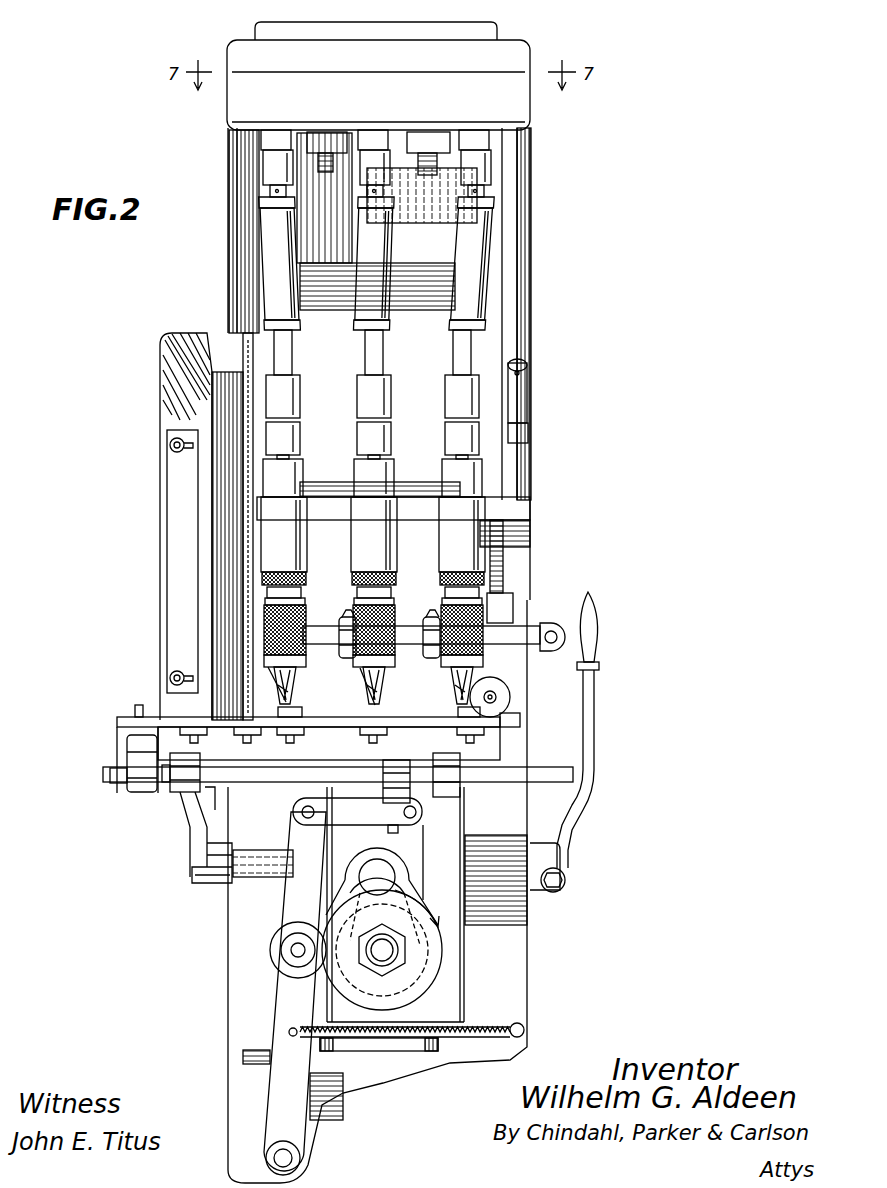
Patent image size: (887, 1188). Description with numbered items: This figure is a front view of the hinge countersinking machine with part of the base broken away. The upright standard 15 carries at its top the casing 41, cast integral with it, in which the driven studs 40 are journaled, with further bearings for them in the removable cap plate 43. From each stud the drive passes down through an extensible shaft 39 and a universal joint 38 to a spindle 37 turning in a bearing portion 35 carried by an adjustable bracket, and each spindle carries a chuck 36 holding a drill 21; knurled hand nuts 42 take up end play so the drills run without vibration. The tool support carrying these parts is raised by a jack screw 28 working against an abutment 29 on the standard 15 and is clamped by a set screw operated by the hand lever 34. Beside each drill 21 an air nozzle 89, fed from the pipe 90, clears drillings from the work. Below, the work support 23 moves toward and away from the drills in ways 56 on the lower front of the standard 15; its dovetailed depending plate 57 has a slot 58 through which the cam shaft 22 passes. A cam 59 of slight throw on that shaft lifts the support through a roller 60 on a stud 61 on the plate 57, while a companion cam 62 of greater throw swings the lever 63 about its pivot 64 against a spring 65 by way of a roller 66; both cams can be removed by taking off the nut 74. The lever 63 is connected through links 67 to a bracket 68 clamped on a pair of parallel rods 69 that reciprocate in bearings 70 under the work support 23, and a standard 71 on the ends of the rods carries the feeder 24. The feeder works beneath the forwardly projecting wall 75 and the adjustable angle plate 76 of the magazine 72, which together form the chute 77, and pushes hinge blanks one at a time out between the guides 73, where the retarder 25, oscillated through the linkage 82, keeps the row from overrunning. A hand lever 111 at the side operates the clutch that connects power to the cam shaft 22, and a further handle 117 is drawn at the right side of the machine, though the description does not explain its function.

The standard 15 is at (238, 273).
The drills 21 is at (380, 690).
The cam shaft 22 is at (387, 953).
The work support 23 is at (487, 745).
The feeder 24 is at (117, 722).
The retarder 25 is at (503, 699).
The jack screw 28 is at (505, 578).
The abutment 29 is at (480, 625).
The hand lever 34 is at (523, 400).
The bearing portions 35 is at (470, 538).
The chucks 36 is at (513, 610).
The spindles 37 is at (467, 480).
The universal joints 38 is at (490, 190).
The extensible shafts 39 is at (487, 250).
The driven studs 40 is at (422, 165).
The casing 41 is at (245, 97).
The knurled hand nuts 42 is at (437, 578).
The cap plate 43 is at (517, 58).
The ways 56 is at (455, 1053).
The depending plate 57 is at (395, 1053).
The slot 58 is at (420, 880).
The cam 59 is at (450, 975).
The roller 60 is at (395, 867).
The stud 61 is at (375, 860).
The cam 62 is at (550, 893).
The lever 63 is at (290, 895).
The pivot 64 is at (275, 1160).
The spring 65 is at (355, 1040).
The roller 66 is at (288, 975).
The links 67 is at (333, 817).
The bracket 68 is at (400, 797).
The parallel rods 69 is at (250, 783).
The bearings 70 is at (176, 795).
The standard 71 is at (130, 752).
The magazine 72 is at (168, 412).
The guides 73 is at (303, 707).
The nut 74 is at (372, 965).
The forwardly projecting wall 75 is at (250, 452).
The angle plate 76 is at (178, 523).
The chute 77 is at (225, 565).
The linkage 82 is at (198, 838).
The air nozzle 89 is at (357, 685).
The pipe 90 is at (508, 644).
The hand levers 111 is at (192, 820).
The handle 117 is at (594, 640).